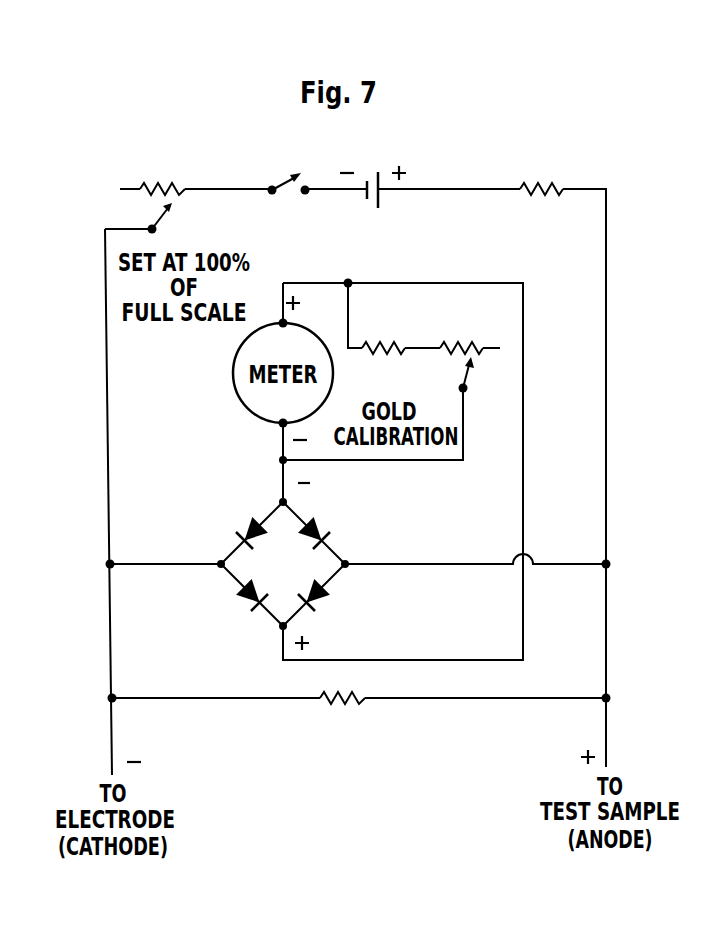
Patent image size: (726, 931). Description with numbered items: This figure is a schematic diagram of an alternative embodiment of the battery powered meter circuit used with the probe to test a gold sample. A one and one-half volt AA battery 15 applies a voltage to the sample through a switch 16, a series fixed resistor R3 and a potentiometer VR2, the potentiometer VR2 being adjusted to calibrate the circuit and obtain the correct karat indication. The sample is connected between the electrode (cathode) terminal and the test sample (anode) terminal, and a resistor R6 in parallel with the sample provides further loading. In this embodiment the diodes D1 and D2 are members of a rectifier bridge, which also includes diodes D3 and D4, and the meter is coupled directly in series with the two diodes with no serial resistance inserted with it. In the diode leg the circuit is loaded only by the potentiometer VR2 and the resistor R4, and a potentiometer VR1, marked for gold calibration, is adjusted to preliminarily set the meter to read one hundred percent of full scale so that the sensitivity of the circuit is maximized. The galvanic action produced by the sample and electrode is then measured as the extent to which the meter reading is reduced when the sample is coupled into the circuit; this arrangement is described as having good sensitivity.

The battery 15 is at (372, 198).
The switch 16 is at (285, 180).
The potentiometer VR2 is at (179, 194).
The series fixed resistor R3 is at (530, 193).
The resistor R4 is at (368, 352).
The potentiometer VR1 is at (471, 354).
The resistor R6 is at (328, 705).
The diode D1 is at (235, 525).
The diode D2 is at (330, 526).
The diode D3 is at (239, 608).
The diode D4 is at (330, 608).